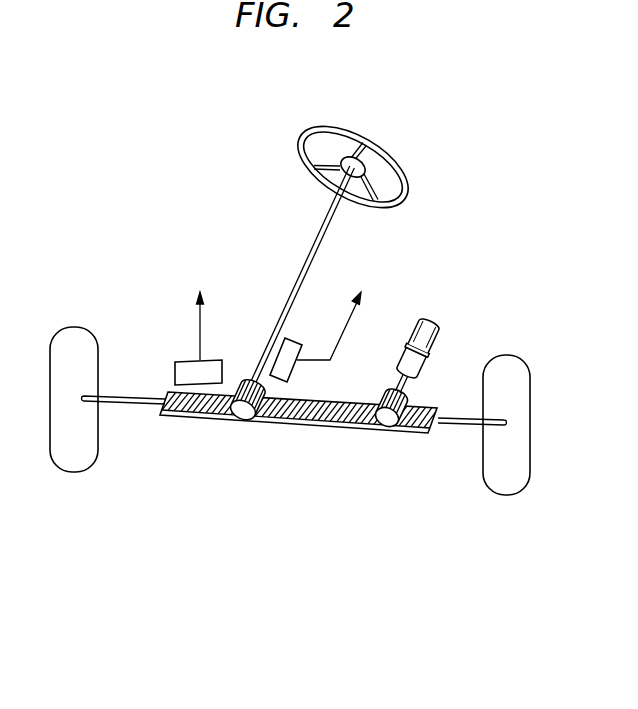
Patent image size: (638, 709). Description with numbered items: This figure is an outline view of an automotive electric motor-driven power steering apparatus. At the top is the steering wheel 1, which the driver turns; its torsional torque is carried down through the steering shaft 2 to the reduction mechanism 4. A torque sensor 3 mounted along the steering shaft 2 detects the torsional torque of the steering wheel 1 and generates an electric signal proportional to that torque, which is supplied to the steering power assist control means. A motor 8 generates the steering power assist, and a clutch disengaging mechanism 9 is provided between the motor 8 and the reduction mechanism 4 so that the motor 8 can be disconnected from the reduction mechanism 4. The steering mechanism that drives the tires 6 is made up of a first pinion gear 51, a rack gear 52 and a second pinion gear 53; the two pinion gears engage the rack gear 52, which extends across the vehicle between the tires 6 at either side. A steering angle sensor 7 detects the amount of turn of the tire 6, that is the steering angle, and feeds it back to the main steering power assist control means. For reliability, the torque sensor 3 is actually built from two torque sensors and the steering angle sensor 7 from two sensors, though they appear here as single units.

The steering wheel 1 is at (318, 129).
The steering shaft 2 is at (305, 262).
The torque sensor 3 is at (298, 340).
The reduction mechanism 4 is at (398, 349).
The tires 6 is at (68, 330).
The steering angle sensor 7 is at (183, 361).
The motor 8 is at (422, 320).
The clutch disengaging mechanism 9 is at (408, 336).
The first pinion gear 51 is at (242, 423).
The rack gear 52 is at (392, 428).
The second pinion gear 53 is at (320, 434).